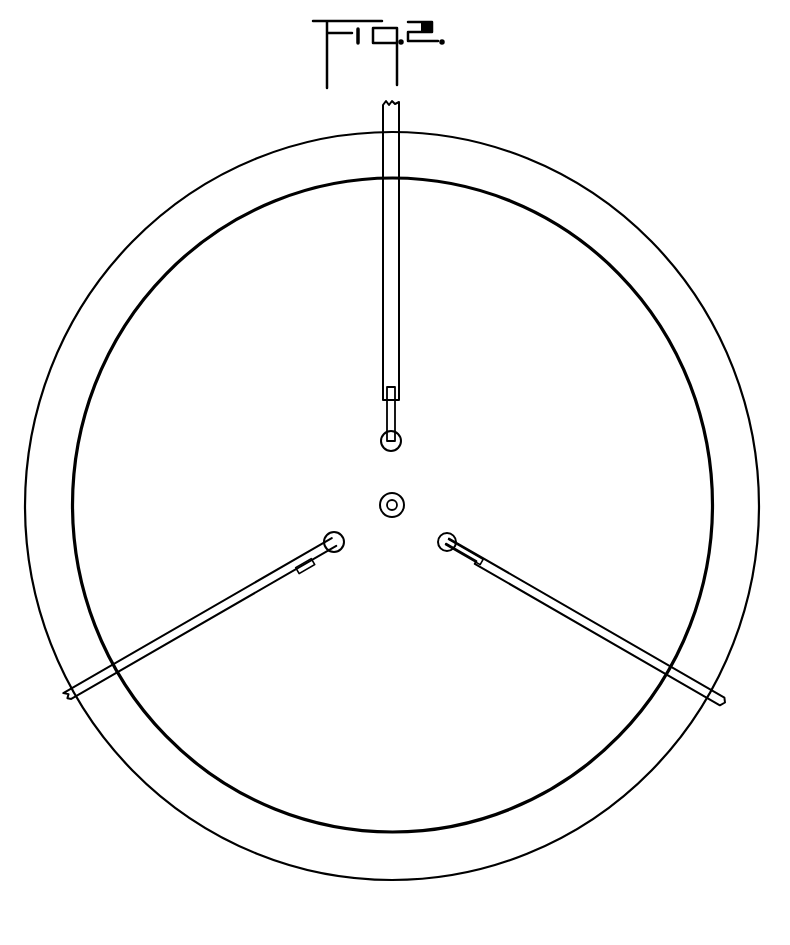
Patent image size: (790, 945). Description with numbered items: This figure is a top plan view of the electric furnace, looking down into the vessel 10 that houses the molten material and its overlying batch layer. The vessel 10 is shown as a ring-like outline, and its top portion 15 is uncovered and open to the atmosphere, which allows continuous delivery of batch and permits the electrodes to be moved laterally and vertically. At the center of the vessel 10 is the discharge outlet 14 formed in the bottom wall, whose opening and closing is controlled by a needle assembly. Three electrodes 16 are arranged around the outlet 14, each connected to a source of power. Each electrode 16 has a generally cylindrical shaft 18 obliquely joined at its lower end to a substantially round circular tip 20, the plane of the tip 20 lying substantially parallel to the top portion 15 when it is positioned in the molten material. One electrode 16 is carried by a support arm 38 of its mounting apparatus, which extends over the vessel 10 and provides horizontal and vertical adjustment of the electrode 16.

The vessel 10 is at (562, 172).
The top portion 15 is at (637, 299).
The discharge outlet 14 is at (401, 497).
The electrode 16 is at (395, 404).
The shaft 18 is at (388, 412).
The electrode tip 20 is at (382, 441).
The support arm 38 is at (172, 644).